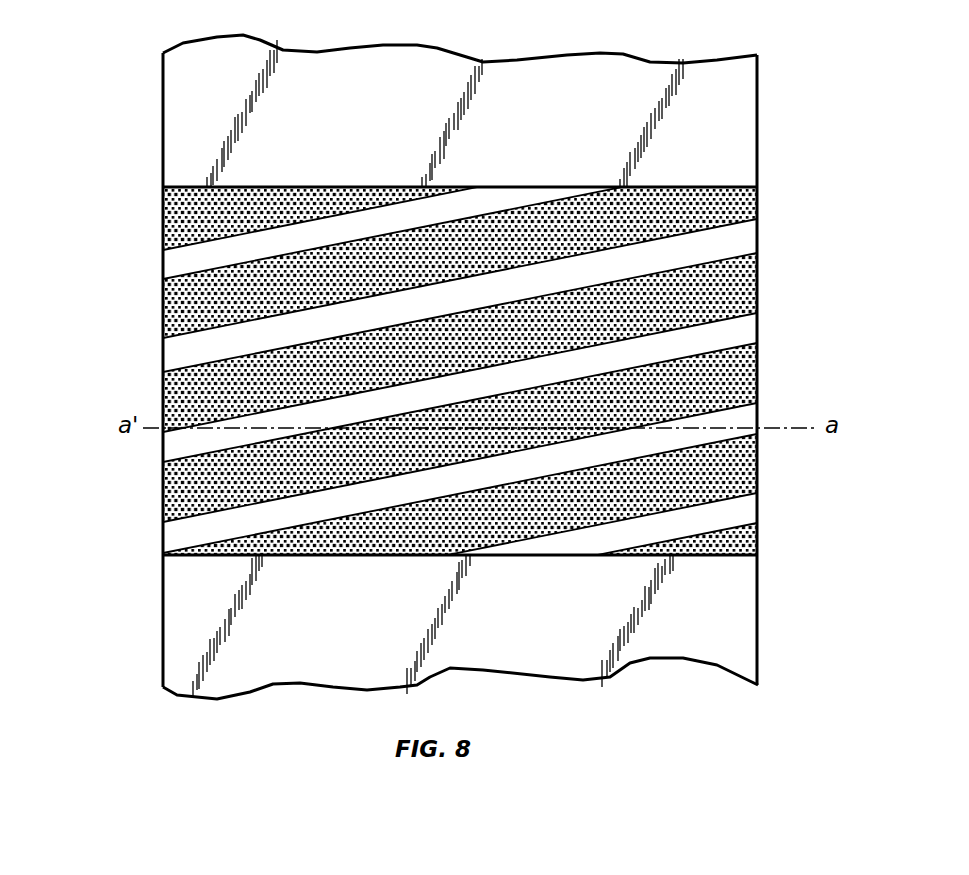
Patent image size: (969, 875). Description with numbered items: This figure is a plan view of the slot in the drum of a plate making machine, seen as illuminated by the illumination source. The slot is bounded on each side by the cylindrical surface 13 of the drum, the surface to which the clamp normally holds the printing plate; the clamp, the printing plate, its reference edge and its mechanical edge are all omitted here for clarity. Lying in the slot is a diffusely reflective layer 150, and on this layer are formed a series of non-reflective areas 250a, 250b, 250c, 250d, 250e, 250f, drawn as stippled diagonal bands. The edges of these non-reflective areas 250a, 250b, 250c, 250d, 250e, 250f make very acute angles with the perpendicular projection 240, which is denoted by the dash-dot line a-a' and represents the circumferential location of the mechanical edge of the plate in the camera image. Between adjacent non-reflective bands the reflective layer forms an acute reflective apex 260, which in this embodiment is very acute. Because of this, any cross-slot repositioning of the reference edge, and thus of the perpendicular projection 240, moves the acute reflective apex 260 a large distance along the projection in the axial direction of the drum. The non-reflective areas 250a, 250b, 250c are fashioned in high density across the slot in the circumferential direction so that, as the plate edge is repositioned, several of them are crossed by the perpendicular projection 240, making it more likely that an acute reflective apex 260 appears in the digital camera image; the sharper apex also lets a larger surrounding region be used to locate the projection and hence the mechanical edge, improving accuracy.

The cylindrical surface 13 is at (758, 128).
The diffusely reflective layer 150 is at (82, 184).
The non-reflective area 250a is at (163, 201).
The non-reflective area 250b is at (758, 199).
The non-reflective area 250c is at (758, 283).
The non-reflective area 250d is at (758, 360).
The non-reflective area 250e is at (758, 459).
The non-reflective area 250f is at (758, 540).
The acute reflective apex 260 is at (283, 425).
The perpendicular projection 240 is at (792, 425).